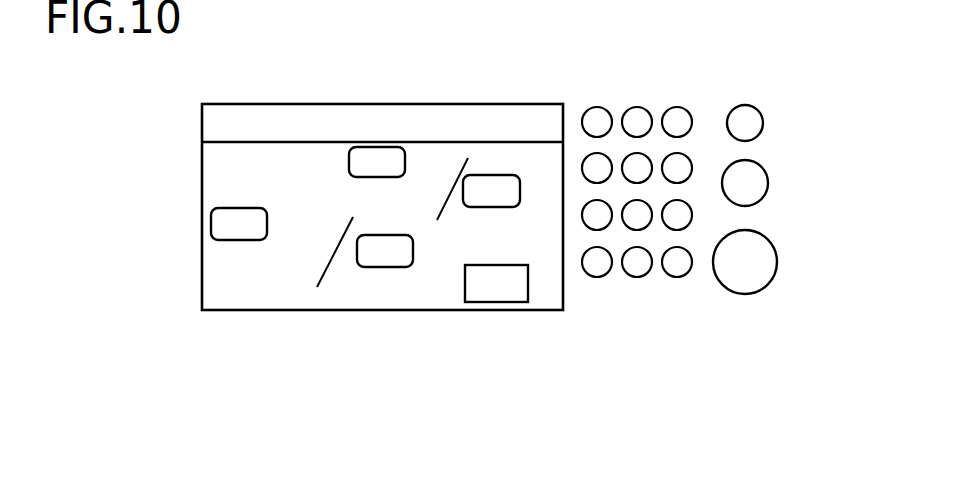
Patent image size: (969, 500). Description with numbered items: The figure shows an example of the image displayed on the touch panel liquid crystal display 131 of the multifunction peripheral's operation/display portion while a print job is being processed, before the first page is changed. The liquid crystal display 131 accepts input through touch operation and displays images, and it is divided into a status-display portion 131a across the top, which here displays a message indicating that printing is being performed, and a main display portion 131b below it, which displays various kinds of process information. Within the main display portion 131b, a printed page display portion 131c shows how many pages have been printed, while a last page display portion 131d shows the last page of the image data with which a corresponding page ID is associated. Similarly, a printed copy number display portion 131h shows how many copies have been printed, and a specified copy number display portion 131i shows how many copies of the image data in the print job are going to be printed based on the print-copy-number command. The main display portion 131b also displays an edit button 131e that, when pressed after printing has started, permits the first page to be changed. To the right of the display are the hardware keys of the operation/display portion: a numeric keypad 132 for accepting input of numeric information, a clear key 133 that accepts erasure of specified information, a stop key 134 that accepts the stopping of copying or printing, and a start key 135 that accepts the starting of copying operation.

The liquid crystal display 131 is at (400, 310).
The status-display portion 131a is at (202, 122).
The main display portion 131b is at (202, 213).
The printed page display portion 131c is at (237, 240).
The last page display portion 131d is at (363, 267).
The edit button 131e is at (495, 310).
The printed copy number display portion 131h is at (392, 147).
The specified copy number display portion 131i is at (503, 175).
The numeric keypad 132 is at (637, 277).
The clear key 133 is at (763, 123).
The stop key 134 is at (768, 183).
The start key 135 is at (777, 258).